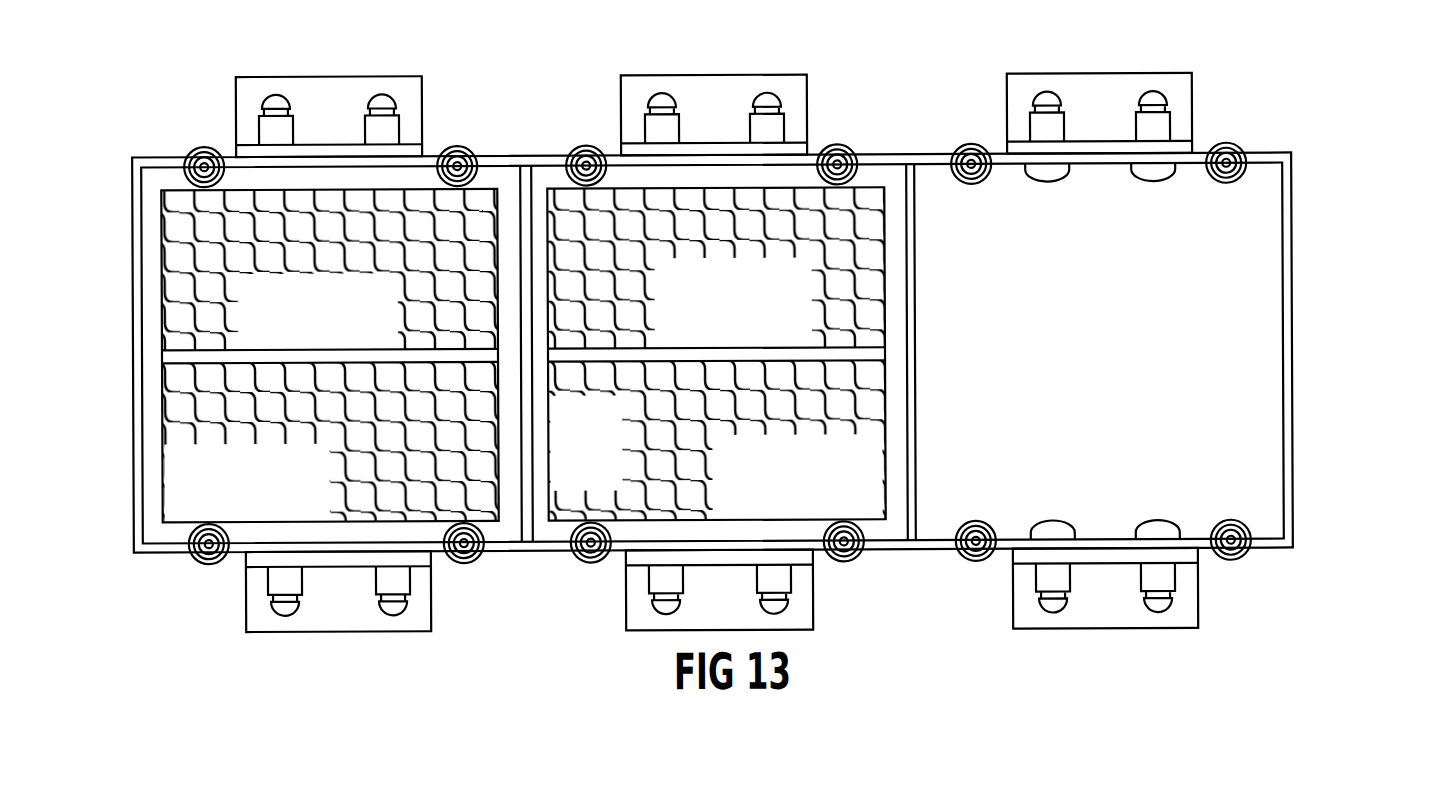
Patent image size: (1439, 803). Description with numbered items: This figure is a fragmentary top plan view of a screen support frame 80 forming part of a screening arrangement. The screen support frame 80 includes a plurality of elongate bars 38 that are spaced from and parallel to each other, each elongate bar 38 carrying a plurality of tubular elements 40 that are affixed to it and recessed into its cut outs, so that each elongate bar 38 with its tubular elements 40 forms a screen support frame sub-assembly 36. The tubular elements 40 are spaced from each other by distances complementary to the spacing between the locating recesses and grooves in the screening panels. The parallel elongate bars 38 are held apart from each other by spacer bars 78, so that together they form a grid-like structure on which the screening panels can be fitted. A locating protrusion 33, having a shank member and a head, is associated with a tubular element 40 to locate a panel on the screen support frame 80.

The locating protrusion 33 is at (1228, 180).
The screen support frame sub-assembly 36 is at (1099, 179).
The elongate bar 38 is at (926, 155).
The tubular element 40 is at (1237, 130).
The spacer bar 78 is at (917, 360).
The screen support frame 80 is at (1378, 219).